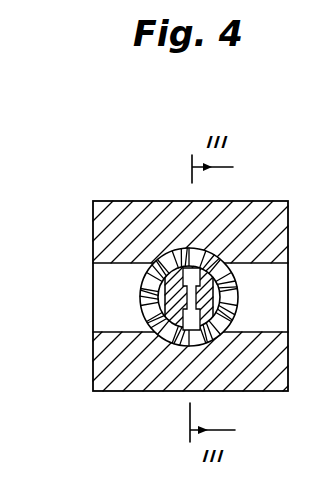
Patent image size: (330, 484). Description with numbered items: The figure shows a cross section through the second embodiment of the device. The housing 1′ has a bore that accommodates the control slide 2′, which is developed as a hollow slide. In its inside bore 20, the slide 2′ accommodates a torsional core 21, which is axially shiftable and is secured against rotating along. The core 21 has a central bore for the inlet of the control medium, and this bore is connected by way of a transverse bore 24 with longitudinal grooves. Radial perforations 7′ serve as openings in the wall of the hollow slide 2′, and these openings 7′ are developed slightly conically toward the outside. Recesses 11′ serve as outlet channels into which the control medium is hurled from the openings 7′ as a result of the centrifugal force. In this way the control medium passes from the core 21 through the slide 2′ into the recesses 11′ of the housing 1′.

The housing 1′ is at (280, 230).
The recesses 11′ is at (107, 272).
The torsional core 21 is at (143, 300).
The inside bore 20 is at (143, 321).
The transverse bore 24 is at (238, 272).
The control slide 2′ is at (238, 318).
The radial perforations 7′ is at (217, 331).